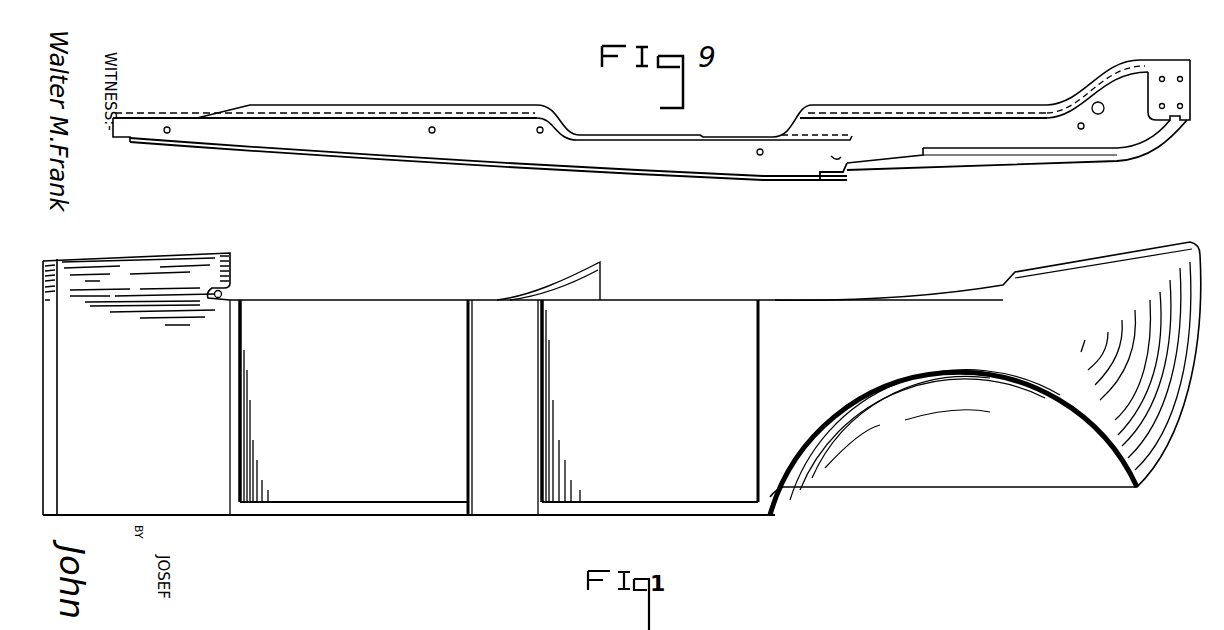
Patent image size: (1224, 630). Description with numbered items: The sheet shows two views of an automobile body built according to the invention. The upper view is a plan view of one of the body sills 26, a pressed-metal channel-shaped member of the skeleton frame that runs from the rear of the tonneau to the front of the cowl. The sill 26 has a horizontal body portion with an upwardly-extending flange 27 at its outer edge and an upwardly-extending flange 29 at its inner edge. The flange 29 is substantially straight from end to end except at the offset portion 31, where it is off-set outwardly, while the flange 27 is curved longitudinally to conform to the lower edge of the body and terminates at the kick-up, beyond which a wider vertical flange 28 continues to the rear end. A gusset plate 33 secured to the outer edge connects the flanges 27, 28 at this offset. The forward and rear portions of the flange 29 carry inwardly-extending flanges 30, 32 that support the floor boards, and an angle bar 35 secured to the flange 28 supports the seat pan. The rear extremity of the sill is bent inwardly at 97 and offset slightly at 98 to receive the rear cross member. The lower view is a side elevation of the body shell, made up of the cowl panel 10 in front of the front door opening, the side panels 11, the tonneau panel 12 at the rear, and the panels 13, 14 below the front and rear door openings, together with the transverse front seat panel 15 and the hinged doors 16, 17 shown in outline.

In FIG. 1, the cowl panel 10 is at (166, 291).
In FIG. 1, the side panels 11 is at (499, 335).
In FIG. 1, the tonneau panel 12 is at (1072, 306).
In FIG. 1, the panel below front door opening 13 is at (381, 510).
In FIG. 1, the panel below rear door opening 14 is at (696, 509).
In FIG. 1, the front seat panel 15 is at (580, 290).
In FIG. 1, the front hinged door 16 is at (370, 327).
In FIG. 1, the rear hinged door 17 is at (686, 338).
In FIG. 9, the body sill 26 is at (625, 150).
In FIG. 9, the outer upwardly-extending flange 27 is at (322, 160).
In FIG. 9, the vertical flange 28 is at (1030, 160).
In FIG. 9, the inner upwardly-extending flange 29 is at (163, 119).
In FIG. 9, the forward inwardly-extending flange 30 is at (450, 108).
In FIG. 9, the offset portion 31 is at (588, 138).
In FIG. 9, the rear inwardly-extending flange 32 is at (822, 108).
In FIG. 9, the gusset plate 33 is at (821, 163).
In FIG. 9, the angle bar 35 is at (972, 149).
In FIG. 9, the inwardly bent rear end extremity 97 is at (1130, 80).
In FIG. 9, the offset 98 is at (1170, 78).